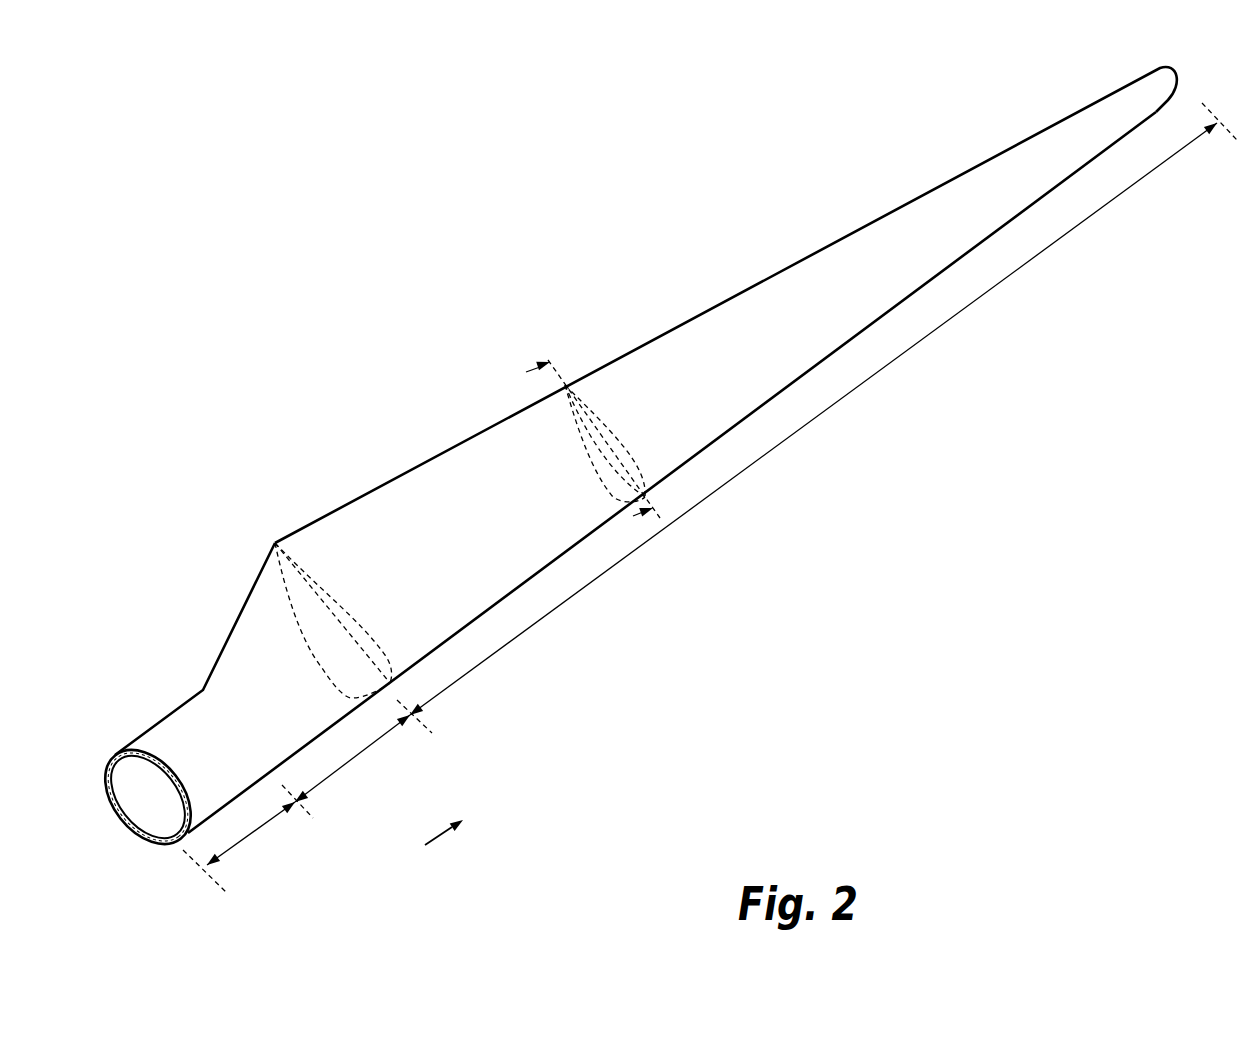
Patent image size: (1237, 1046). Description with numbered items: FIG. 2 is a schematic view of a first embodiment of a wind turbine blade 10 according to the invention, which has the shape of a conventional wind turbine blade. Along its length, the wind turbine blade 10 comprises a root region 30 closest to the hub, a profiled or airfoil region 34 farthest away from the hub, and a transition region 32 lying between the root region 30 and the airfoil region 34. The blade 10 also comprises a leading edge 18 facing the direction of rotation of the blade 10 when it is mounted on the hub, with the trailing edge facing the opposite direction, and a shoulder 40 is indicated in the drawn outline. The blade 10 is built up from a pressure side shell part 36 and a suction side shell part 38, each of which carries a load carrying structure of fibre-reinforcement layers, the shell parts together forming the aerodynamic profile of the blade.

The wind turbine blade 10 is at (646, 456).
The leading edge 18 is at (852, 338).
The root region 30 is at (252, 833).
The transition region 32 is at (357, 757).
The airfoil region 34 is at (735, 480).
The pressure side shell part 36 is at (140, 750).
The suction side shell part 38 is at (110, 757).
The shoulder 40 is at (275, 545).